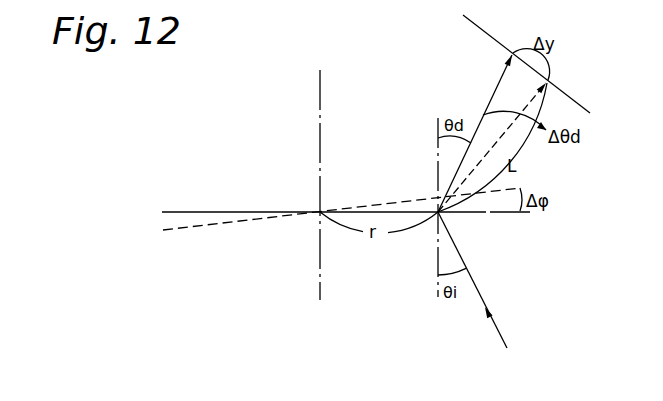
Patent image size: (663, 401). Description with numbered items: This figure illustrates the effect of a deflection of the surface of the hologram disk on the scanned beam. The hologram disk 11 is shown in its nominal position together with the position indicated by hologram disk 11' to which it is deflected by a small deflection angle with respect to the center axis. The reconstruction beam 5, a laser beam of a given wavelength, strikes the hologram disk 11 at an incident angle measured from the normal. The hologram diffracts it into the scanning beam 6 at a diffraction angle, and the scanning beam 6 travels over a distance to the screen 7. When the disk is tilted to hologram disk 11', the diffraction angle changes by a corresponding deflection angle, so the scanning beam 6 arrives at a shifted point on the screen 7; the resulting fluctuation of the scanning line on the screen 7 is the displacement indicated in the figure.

The reconstruction beam 5 is at (497, 325).
The scanning beam 6 is at (500, 73).
The screen 7 is at (568, 99).
The hologram disk 11 is at (346, 195).
The deflected hologram disk 11' is at (341, 228).